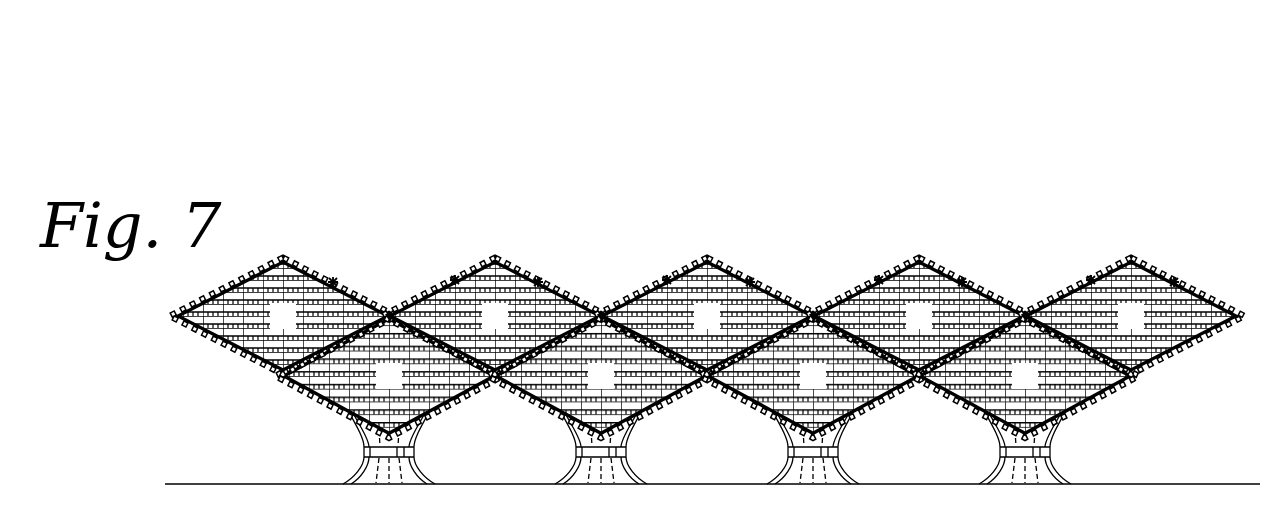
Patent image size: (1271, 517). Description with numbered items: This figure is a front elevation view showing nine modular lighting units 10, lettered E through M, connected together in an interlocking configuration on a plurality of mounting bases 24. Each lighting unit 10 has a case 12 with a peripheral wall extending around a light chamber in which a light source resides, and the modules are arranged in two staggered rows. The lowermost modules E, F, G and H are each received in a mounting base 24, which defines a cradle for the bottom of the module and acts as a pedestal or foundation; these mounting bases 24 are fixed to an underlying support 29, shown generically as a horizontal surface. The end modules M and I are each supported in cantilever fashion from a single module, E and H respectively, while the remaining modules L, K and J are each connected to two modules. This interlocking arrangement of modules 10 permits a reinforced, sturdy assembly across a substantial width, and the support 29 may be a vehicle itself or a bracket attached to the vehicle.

The modular lighting unit 10 is at (334, 278).
The case 12 is at (540, 278).
The mounting base 24 is at (748, 445).
The support 29 is at (712, 500).